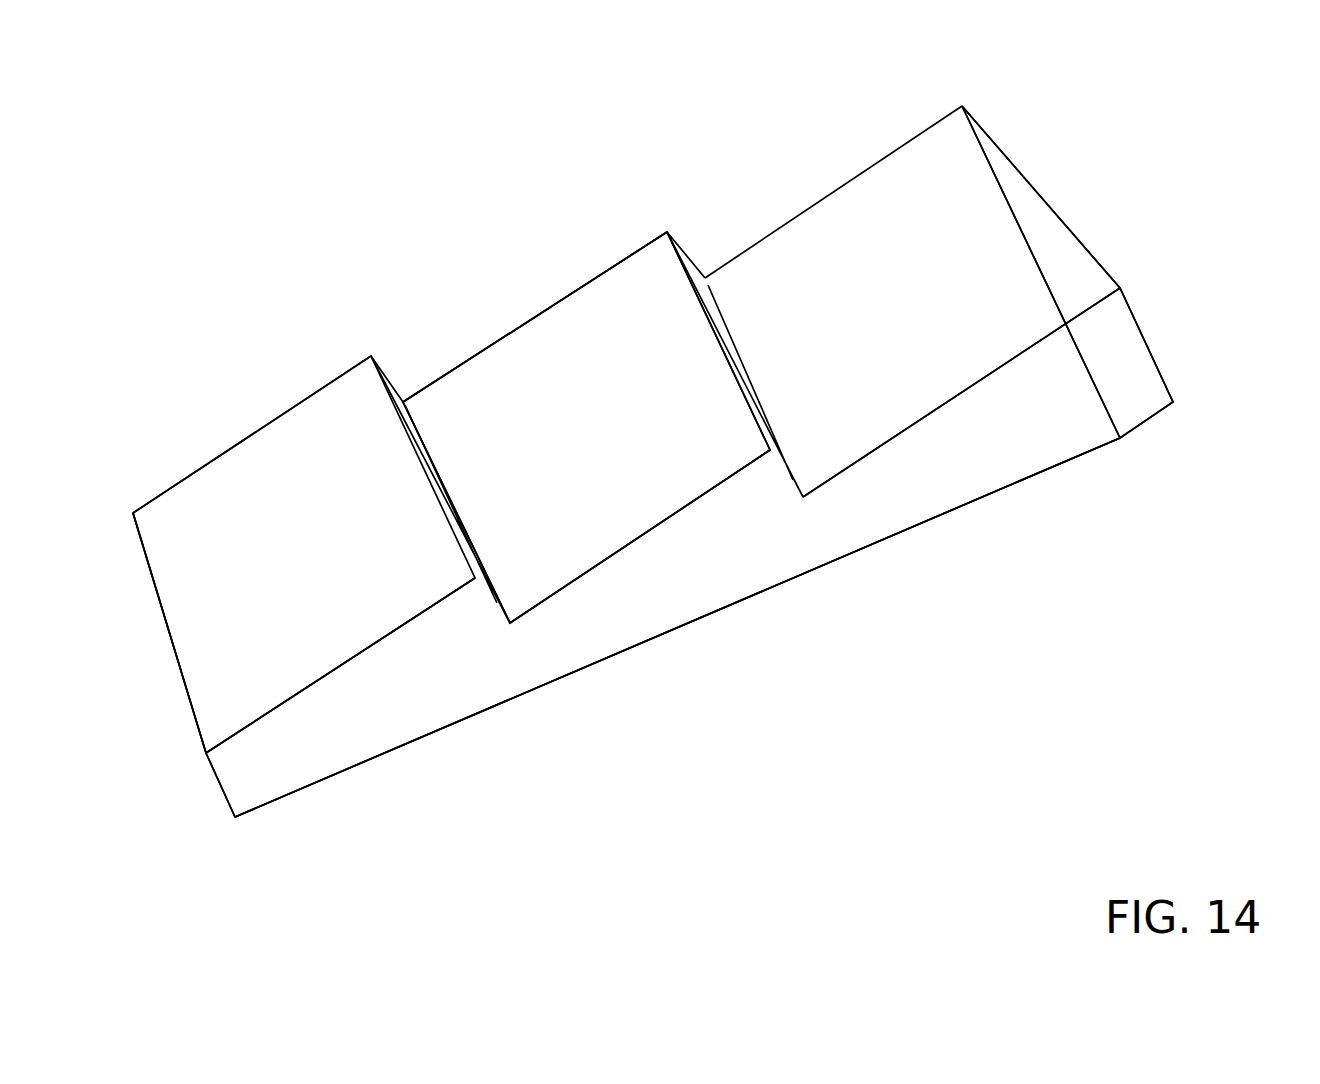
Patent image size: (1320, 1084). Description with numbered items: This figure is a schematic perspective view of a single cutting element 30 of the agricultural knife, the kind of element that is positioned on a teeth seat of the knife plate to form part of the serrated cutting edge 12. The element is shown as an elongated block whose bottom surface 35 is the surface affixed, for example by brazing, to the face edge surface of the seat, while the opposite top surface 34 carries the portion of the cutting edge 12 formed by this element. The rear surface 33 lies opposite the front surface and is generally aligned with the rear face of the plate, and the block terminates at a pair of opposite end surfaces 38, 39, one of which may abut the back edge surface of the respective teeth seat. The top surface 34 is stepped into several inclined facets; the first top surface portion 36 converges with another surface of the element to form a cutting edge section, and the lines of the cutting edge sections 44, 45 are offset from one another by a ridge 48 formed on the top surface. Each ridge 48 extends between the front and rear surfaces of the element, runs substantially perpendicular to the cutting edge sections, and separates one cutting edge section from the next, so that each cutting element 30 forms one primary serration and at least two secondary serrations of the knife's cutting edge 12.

The cutting edge 12 is at (262, 389).
The cutting element 30 is at (1056, 148).
The rear surface 33 is at (783, 540).
The top surface 34 is at (597, 215).
The bottom surface 35 is at (643, 642).
The first top surface portion 36 is at (550, 342).
The end surface 38 is at (1113, 353).
The end surface 39 is at (212, 772).
The cutting edge section 44 is at (827, 195).
The cutting edge section 45 is at (582, 288).
The ridge 48 is at (397, 382).